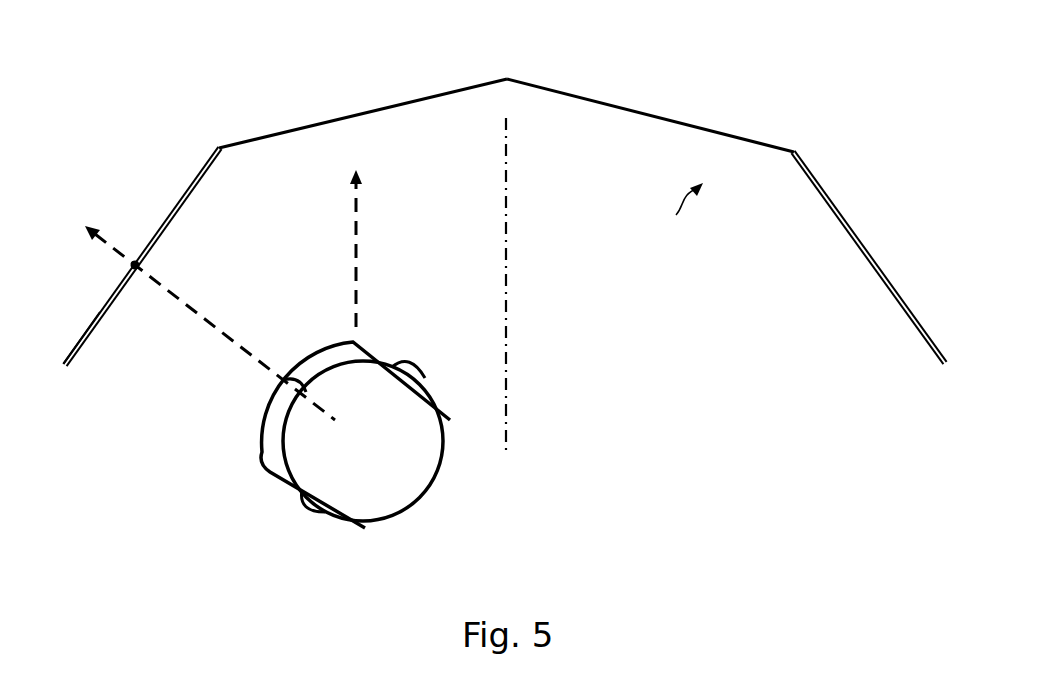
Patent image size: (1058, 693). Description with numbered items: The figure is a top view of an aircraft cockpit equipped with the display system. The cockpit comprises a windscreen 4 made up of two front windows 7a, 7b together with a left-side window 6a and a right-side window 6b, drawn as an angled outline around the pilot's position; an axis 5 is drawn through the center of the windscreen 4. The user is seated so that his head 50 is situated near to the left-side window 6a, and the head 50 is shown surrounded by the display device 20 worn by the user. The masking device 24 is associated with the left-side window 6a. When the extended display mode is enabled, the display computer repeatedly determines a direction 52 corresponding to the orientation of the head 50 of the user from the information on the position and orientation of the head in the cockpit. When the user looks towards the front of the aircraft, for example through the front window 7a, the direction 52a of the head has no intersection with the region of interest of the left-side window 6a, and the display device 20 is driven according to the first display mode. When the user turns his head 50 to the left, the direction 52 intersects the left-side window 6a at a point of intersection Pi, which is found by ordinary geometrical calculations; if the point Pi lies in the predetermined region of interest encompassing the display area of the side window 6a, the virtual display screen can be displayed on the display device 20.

The windscreen 4 is at (681, 225).
The central axis 5 is at (507, 287).
The left-side window 6a is at (167, 217).
The right-side window 6b is at (855, 230).
The front window 7a is at (317, 123).
The front window 7b is at (622, 107).
The display device 20 is at (268, 472).
The masking device 24 is at (93, 337).
The head 50 is at (433, 492).
The direction 52 is at (228, 338).
The direction 52a is at (358, 246).
The point of intersection Pi is at (143, 264).